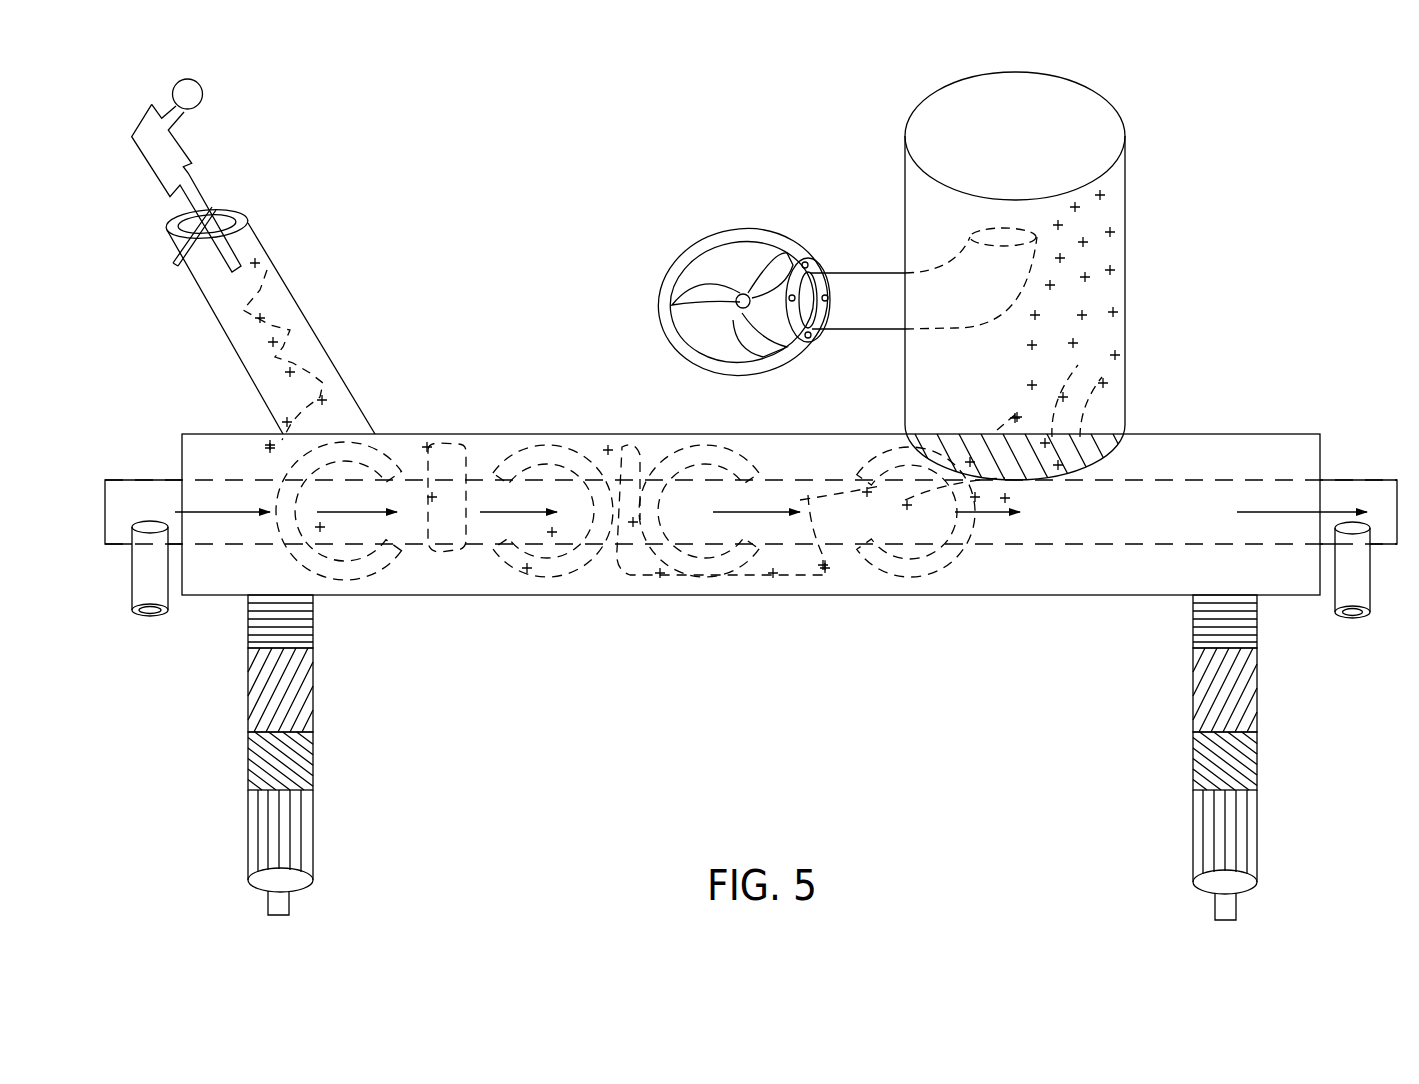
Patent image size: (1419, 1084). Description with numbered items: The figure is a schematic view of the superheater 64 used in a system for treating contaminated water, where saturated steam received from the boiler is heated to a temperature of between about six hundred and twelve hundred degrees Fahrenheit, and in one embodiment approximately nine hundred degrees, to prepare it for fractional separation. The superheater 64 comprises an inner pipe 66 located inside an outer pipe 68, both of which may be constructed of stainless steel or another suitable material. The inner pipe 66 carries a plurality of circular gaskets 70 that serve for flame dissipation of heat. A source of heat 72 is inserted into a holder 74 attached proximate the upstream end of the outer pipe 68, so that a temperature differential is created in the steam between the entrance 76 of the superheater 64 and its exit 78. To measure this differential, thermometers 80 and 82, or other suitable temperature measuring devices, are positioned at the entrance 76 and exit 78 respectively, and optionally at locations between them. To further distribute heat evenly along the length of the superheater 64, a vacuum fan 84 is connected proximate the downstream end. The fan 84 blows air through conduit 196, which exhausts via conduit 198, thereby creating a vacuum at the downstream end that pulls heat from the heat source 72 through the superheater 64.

The superheater 64 is at (1240, 227).
The inner pipe 66 is at (1196, 480).
The outer pipe 68 is at (535, 434).
The circular gaskets 70 is at (385, 443).
The source of heat 72 is at (188, 153).
The holder 74 is at (303, 320).
The entrance 76 is at (148, 468).
The exit 78 is at (1350, 466).
The thermometer 80 is at (152, 617).
The thermometer 82 is at (1353, 619).
The vacuum fan 84 is at (742, 228).
The conduit 196 is at (868, 271).
The conduit 198 is at (903, 183).